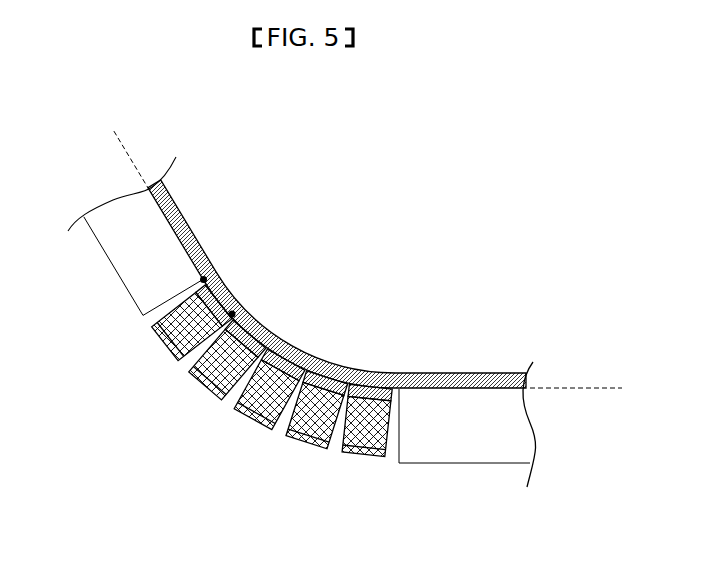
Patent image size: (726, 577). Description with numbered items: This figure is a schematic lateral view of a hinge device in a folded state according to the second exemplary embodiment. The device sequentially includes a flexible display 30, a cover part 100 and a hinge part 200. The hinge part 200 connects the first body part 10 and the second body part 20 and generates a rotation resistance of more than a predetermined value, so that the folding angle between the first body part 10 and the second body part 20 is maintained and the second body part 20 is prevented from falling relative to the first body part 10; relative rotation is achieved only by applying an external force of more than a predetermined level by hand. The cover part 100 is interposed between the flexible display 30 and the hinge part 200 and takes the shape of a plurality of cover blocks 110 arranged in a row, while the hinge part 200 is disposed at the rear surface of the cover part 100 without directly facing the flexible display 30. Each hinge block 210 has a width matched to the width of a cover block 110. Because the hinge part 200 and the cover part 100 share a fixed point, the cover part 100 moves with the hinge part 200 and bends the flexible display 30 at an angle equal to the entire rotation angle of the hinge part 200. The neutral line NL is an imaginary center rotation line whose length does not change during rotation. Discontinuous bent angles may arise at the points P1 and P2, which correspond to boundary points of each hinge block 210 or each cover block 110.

The first body part 10 is at (132, 258).
The second body part 20 is at (473, 447).
The flexible display 30 is at (496, 380).
The cover part 100 is at (192, 391).
The cover block 110 is at (380, 417).
The hinge part 200 is at (262, 404).
The hinge block 210 is at (381, 406).
The boundary point P1 is at (205, 277).
The boundary point P2 is at (233, 312).
The neutral line NL is at (594, 388).